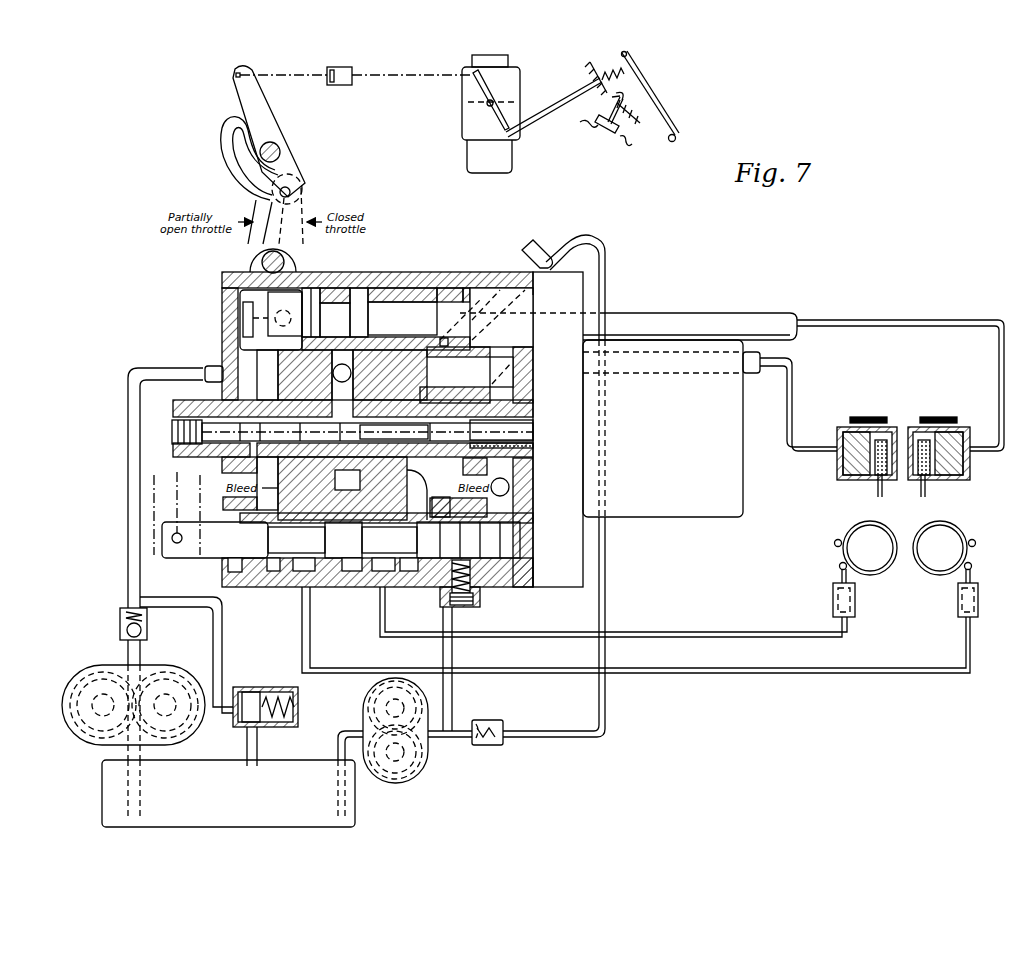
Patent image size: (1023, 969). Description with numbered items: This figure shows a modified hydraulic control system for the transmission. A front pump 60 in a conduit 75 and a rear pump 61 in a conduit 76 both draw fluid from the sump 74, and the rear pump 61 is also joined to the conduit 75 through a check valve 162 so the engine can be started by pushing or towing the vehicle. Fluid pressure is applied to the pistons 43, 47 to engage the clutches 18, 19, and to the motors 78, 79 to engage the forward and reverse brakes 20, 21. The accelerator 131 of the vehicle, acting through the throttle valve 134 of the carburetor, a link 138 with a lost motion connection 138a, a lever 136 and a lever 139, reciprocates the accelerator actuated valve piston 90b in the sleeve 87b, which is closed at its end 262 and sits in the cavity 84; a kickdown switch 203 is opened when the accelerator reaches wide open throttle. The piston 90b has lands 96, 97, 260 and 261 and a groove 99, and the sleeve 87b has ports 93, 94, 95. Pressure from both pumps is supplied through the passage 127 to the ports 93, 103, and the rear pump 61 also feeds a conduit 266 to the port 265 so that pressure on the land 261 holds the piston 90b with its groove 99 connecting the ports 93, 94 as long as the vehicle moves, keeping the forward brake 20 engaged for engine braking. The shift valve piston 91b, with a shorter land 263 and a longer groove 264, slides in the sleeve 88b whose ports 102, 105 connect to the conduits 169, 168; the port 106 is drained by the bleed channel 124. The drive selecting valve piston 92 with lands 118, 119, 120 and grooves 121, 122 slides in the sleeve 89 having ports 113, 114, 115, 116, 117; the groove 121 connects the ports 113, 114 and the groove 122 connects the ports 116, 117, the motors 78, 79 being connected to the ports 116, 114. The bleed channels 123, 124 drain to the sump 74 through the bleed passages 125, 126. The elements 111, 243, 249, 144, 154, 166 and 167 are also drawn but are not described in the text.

The lever 136 is at (245, 100).
The link 138 is at (388, 78).
The lost motion connection 138a is at (340, 86).
The throttle valve 134 is at (470, 105).
The accelerator 131 is at (595, 96).
The kickdown switch 203 is at (606, 140).
The lever 139 is at (300, 205).
The sleeve 87b is at (410, 227).
The accelerator actuated valve piston 90b is at (222, 318).
The land 96 is at (312, 300).
The port 93 is at (335, 296).
The groove 99 is at (335, 320).
The land 97 is at (360, 305).
The port 94 is at (393, 295).
The port 95 is at (418, 285).
The closed end 262 is at (447, 300).
The land 261 is at (462, 294).
The land 260 is at (470, 290).
The port 265 is at (476, 345).
The cylindrical cavity 84 is at (535, 292).
The conduit 127 is at (302, 343).
The bleed channel 123 is at (265, 358).
The port 102 is at (295, 398).
The port 105 is at (399, 375).
The bleed channel 124 is at (494, 360).
The passage 243 is at (478, 398).
The bore wall 249 is at (215, 402).
The valve piston 91b is at (165, 430).
The groove 264 is at (394, 431).
The port 106 is at (455, 438).
The valve sleeve 88b is at (527, 455).
The bleed passage 125 is at (226, 474).
The passage 111 is at (268, 483).
The land 263 is at (330, 478).
The port 103 is at (349, 480).
The bleed passage 126 is at (509, 487).
The sleeve 89 is at (527, 518).
The valve piston 92 is at (152, 538).
The land 118 is at (245, 540).
The groove 121 is at (312, 556).
The land 119 is at (341, 540).
The groove 122 is at (400, 556).
The port 113 is at (272, 572).
The port 114 is at (297, 572).
The port 115 is at (343, 572).
The port 116 is at (380, 572).
The port 117 is at (408, 572).
The land 120 is at (450, 598).
The fluid conduit 76 is at (606, 285).
The conduit 169 is at (712, 312).
The conduit 168 is at (793, 384).
The servo housing 144 is at (706, 517).
The piston 43 is at (845, 438).
The piston 47 is at (958, 440).
The clutch 18 is at (876, 485).
The clutch 19 is at (919, 485).
The brake 20 is at (845, 528).
The brake 21 is at (965, 528).
The fluid pressure operated motor 78 is at (856, 606).
The fluid pressure operated motor 79 is at (955, 610).
The conduit 166 is at (655, 634).
The conduit 167 is at (670, 673).
The conduit 266 is at (453, 652).
The rear pump 61 is at (428, 768).
The fluid sump 74 is at (356, 801).
The front pump 60 is at (98, 663).
The check valve 162 is at (118, 607).
The fluid conduit 75 is at (130, 495).
The pressure regulator valve 154 is at (258, 685).